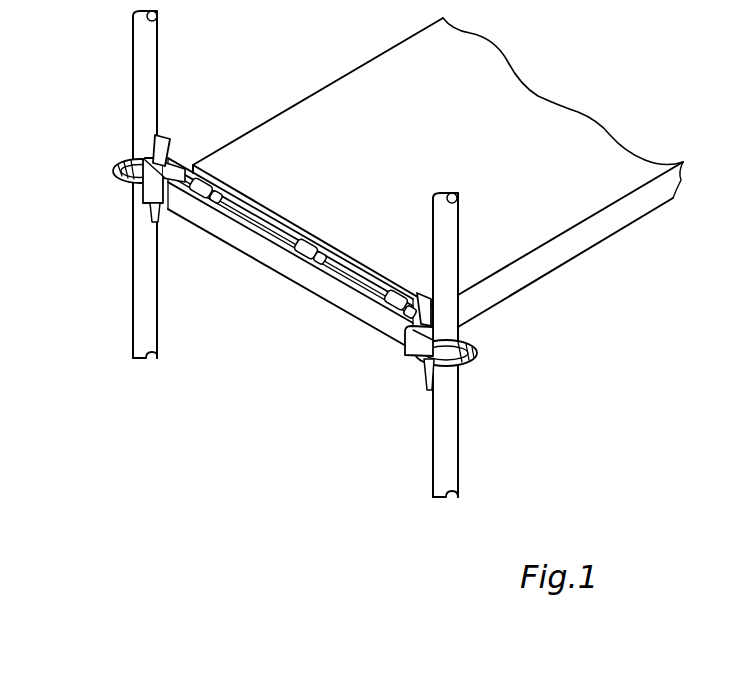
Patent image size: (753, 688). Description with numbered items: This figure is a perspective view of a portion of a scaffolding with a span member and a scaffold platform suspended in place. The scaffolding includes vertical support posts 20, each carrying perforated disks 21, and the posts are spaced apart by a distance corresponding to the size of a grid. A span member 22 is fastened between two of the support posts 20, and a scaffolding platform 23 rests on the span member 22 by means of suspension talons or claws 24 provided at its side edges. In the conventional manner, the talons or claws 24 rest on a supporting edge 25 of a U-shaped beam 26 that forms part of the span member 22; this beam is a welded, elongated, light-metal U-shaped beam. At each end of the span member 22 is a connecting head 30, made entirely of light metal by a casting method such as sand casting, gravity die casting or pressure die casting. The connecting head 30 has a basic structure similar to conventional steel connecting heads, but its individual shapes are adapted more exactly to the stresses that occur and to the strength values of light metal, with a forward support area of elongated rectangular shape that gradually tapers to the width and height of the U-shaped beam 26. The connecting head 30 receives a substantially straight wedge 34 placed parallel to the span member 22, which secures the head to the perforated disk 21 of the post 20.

The vertical support post 20 is at (147, 312).
The perforated disk 21 is at (124, 174).
The span member 22 is at (240, 251).
The scaffolding platform 23 is at (538, 218).
The suspension talon or claw 24 is at (203, 192).
The supporting edge 25 is at (263, 217).
The U-shaped beam 26 is at (328, 270).
The connecting head 30 is at (177, 167).
The wedge 34 is at (162, 148).